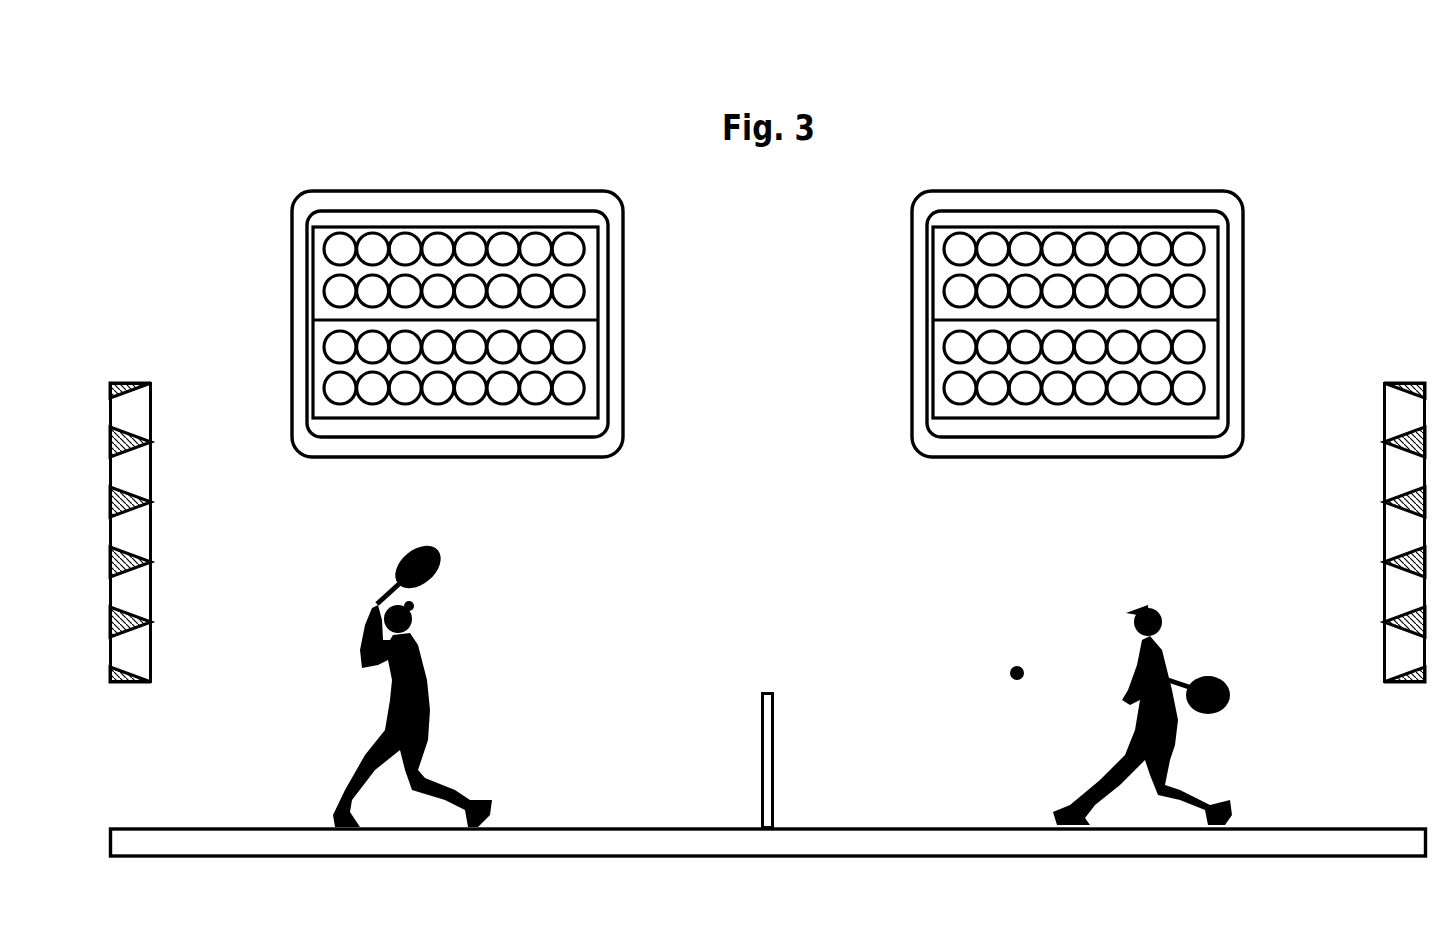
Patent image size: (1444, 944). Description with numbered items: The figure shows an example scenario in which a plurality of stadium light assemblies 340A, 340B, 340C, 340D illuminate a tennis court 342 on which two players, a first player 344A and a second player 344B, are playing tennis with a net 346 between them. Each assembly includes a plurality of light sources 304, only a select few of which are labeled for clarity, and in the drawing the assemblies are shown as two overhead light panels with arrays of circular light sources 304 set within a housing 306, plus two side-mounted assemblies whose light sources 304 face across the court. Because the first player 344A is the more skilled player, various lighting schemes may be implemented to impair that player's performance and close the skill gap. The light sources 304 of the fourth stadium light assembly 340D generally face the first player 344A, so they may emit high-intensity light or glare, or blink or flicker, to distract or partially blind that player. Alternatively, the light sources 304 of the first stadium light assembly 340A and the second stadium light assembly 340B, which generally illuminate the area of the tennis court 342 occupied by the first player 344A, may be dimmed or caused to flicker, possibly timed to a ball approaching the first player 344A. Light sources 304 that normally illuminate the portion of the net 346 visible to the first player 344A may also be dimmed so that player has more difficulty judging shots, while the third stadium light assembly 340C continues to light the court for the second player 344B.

The light sources 304 is at (485, 237).
The light source array housing 306 is at (331, 238).
The first stadium light assembly 340A is at (187, 389).
The second stadium light assembly 340B is at (600, 142).
The third stadium light assembly 340C is at (1208, 142).
The fourth stadium light assembly 340D is at (1300, 389).
The tennis court 342 is at (237, 828).
The first player 344A is at (490, 582).
The second player 344B is at (1084, 582).
The net 346 is at (777, 783).